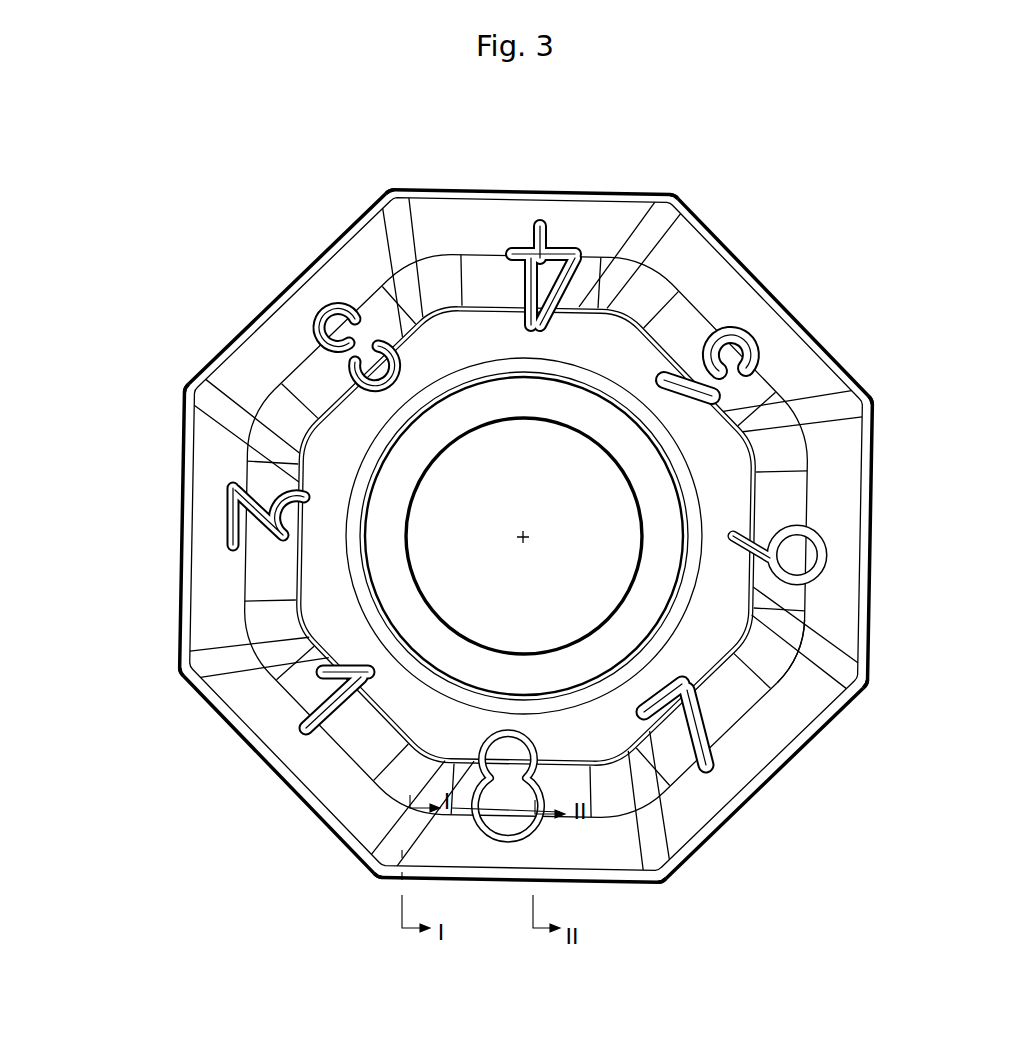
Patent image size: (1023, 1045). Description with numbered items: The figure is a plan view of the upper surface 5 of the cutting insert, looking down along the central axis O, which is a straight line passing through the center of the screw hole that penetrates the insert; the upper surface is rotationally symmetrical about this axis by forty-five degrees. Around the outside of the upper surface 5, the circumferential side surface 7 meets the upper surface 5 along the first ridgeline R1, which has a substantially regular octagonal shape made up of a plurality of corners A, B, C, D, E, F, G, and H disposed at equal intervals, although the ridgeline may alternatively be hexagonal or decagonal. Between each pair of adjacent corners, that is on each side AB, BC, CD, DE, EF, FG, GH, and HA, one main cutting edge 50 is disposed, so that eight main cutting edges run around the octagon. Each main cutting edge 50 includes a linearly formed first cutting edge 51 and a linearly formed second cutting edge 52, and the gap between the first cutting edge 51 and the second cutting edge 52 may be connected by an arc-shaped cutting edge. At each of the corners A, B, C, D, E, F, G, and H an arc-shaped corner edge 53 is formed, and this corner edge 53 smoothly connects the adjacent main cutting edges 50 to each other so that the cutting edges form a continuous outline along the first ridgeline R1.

The upper surface 5 is at (740, 745).
The circumferential side surface 7 is at (708, 840).
The main cutting edge 50 is at (520, 512).
The first cutting edge 51 is at (565, 192).
The second cutting edge 52 is at (490, 192).
The corner edge 53 is at (405, 190).
The first ridgeline R1 is at (785, 803).
The central axis O is at (528, 535).
The corner A is at (383, 872).
The corner B is at (187, 670).
The corner C is at (190, 390).
The corner D is at (395, 192).
The corner E is at (678, 195).
The corner F is at (868, 405).
The corner G is at (866, 690).
The corner H is at (660, 878).